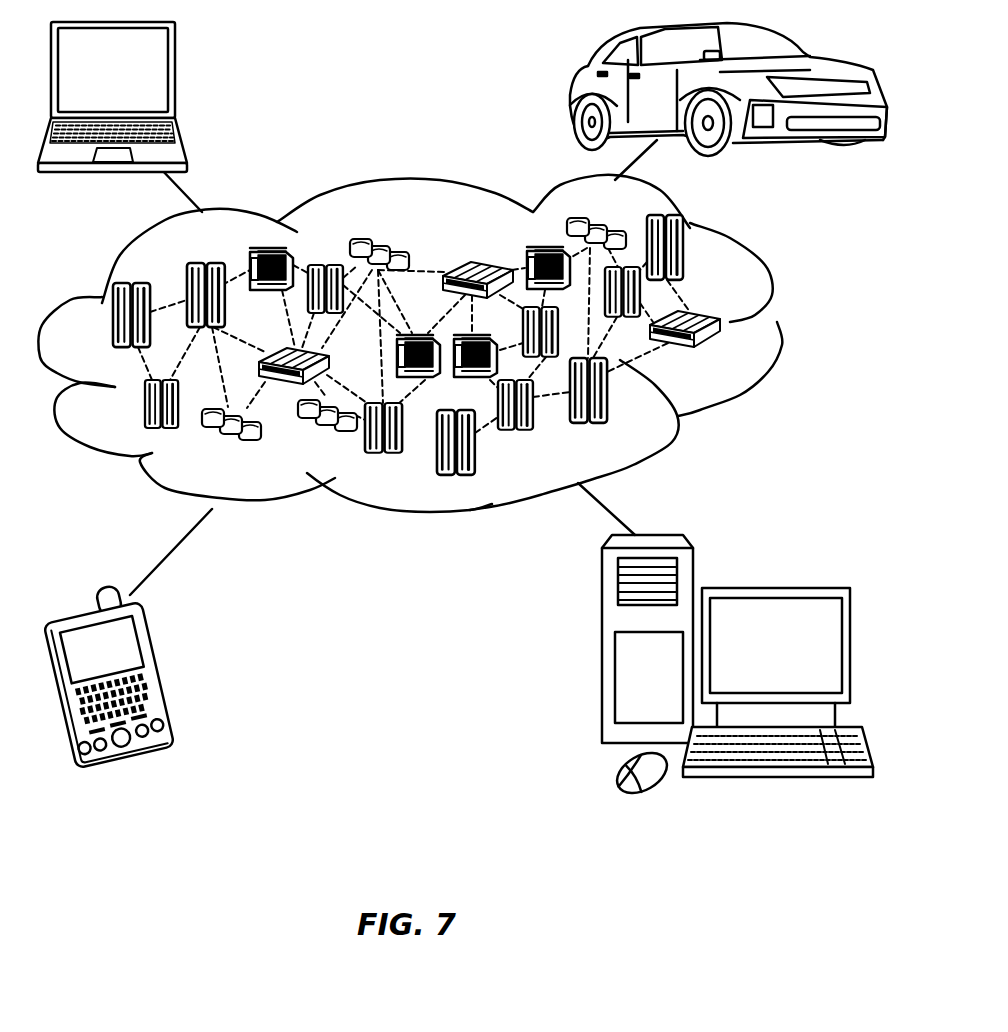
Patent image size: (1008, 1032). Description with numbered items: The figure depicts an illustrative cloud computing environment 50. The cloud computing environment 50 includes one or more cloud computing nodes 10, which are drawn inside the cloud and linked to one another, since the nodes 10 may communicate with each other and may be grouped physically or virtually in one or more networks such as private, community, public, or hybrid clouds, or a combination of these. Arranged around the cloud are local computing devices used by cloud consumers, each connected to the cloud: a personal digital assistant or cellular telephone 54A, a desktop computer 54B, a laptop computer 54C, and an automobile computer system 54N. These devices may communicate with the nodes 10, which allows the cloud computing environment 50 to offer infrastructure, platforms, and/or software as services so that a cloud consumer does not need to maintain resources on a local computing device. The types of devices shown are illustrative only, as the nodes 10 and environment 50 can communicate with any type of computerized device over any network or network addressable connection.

The cloud computing node 10 is at (720, 350).
The cloud computing environment 50 is at (777, 321).
The personal digital assistant or cellular telephone 54A is at (165, 673).
The desktop computer 54B is at (772, 588).
The laptop computer 54C is at (176, 75).
The automobile computer system 54N is at (575, 90).